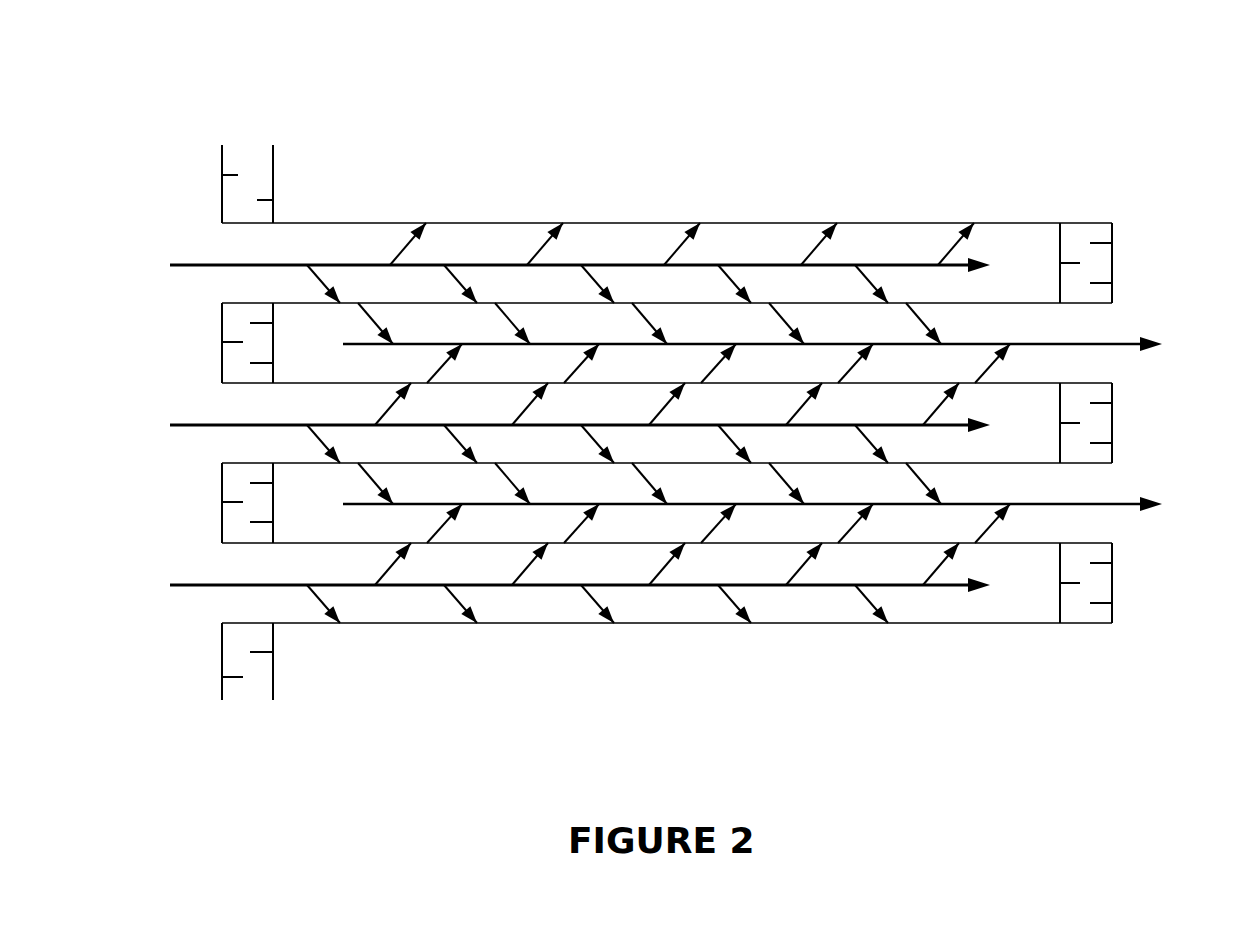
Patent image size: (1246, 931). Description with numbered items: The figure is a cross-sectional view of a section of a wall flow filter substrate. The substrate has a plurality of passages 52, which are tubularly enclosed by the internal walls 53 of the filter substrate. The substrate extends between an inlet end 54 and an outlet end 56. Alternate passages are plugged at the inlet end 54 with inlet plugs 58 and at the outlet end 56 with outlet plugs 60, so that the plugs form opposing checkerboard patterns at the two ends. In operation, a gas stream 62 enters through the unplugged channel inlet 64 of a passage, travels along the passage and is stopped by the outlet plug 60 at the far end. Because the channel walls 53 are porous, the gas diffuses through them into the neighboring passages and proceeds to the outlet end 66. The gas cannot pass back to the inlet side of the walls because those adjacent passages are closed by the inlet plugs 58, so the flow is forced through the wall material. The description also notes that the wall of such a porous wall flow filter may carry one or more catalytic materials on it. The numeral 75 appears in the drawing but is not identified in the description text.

The plate 52 is at (303, 318).
The flow channel 53 is at (658, 302).
The inlet side 54 is at (170, 102).
The outlet side 56 is at (1183, 186).
The inlet header 58 is at (233, 198).
The outlet header 60 is at (1103, 270).
The flow distribution arrows 62 is at (360, 265).
The first fluid flow 64 is at (580, 413).
The second fluid flow 66 is at (752, 440).
The end wall 75 is at (668, 623).